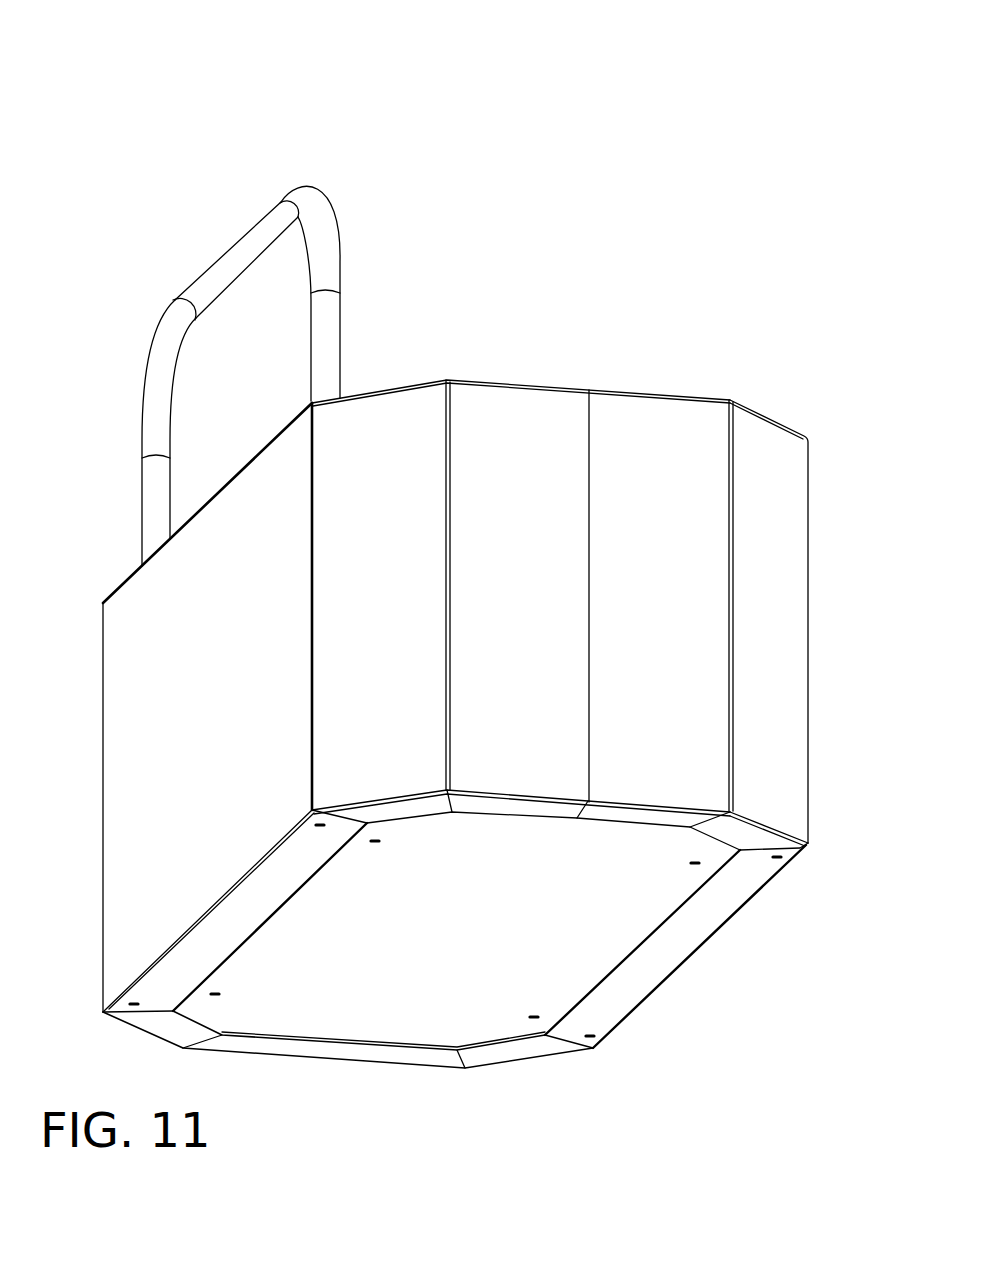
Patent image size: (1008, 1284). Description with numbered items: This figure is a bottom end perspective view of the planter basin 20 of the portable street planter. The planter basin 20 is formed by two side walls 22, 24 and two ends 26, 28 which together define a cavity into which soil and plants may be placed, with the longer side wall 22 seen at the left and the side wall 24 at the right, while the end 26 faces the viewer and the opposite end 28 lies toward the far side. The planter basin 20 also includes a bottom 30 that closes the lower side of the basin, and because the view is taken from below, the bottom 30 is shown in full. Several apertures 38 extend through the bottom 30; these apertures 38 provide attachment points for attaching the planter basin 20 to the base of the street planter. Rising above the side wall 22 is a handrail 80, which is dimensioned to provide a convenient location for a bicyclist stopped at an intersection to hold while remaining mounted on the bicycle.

The planter basin 20 is at (615, 135).
The side wall 22 is at (135, 735).
The side wall 24 is at (810, 627).
The end 26 is at (499, 417).
The end 28 is at (285, 1057).
The bottom 30 is at (376, 1008).
The aperture 38 is at (530, 1015).
The handrail 80 is at (213, 280).